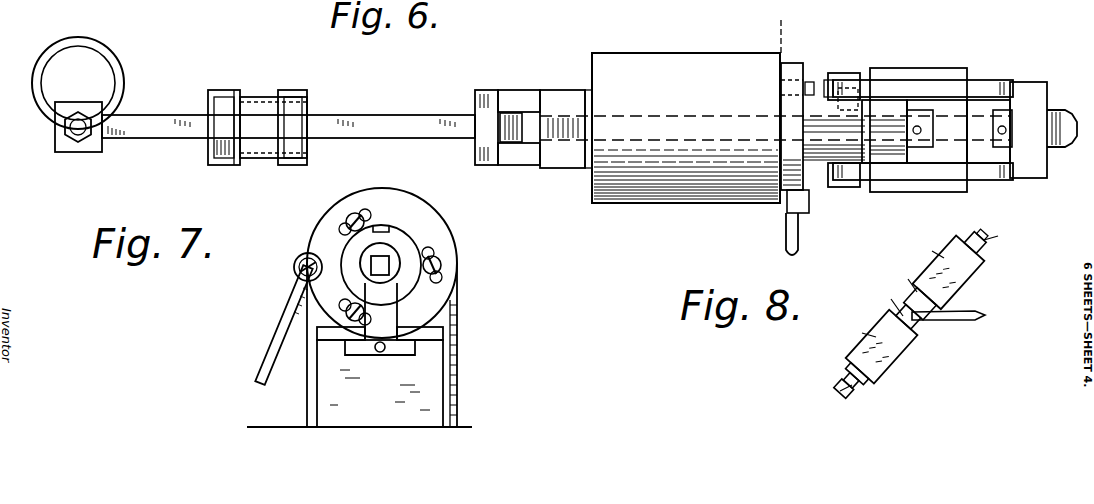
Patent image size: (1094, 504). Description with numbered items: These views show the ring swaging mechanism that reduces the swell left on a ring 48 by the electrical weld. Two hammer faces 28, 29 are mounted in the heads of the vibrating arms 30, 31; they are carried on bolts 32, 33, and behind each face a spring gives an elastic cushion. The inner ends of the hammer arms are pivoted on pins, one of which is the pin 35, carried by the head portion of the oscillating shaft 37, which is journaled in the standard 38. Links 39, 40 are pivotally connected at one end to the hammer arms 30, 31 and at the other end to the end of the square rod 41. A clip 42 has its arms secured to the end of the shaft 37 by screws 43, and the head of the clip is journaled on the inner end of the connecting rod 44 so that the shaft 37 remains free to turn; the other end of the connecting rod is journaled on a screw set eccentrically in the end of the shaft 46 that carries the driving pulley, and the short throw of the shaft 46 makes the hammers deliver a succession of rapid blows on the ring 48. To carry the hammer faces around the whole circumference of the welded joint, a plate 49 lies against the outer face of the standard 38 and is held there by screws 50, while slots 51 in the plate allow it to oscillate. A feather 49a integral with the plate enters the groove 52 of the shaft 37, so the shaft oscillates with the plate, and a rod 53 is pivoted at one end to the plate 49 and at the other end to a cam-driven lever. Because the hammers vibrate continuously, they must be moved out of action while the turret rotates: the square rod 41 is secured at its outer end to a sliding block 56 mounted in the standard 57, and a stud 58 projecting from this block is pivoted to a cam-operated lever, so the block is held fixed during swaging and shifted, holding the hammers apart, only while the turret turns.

In FIG. 8, the hammer face 28 is at (910, 291).
In FIG. 8, the hammer face 29 is at (892, 309).
In FIG. 6, the vibrating arm 30 is at (167, 110).
In FIG. 8, the vibrating arm 30 is at (939, 263).
In FIG. 8, the vibrating arm 31 is at (871, 343).
In FIG. 6, the bolt 32 is at (72, 127).
In FIG. 8, the bolt 32 is at (986, 236).
In FIG. 8, the bolt 33 is at (840, 379).
In FIG. 6, the pin 35 is at (500, 160).
In FIG. 6, the oscillating shaft 37 is at (830, 80).
In FIG. 6, the standard 38 is at (775, 111).
In FIG. 7, the standard 38 is at (397, 189).
In FIG. 6, the link 39 is at (255, 145).
In FIG. 6, the link 40 is at (212, 101).
In FIG. 6, the square rod 41 is at (934, 128).
In FIG. 7, the square rod 41 is at (380, 265).
In FIG. 6, the clip 42 is at (1008, 88).
In FIG. 6, the screw 43 is at (850, 73).
In FIG. 6, the connecting rod 44 is at (1064, 109).
In FIG. 6, the shaft 46 is at (110, 58).
In FIG. 8, the ring 48 is at (976, 311).
In FIG. 6, the plate 49 is at (798, 63).
In FIG. 7, the plate 49 is at (438, 245).
In FIG. 7, the feather 49a is at (383, 231).
In FIG. 6, the screw 50 is at (810, 85).
In FIG. 7, the screw 50 is at (350, 215).
In FIG. 7, the slot 51 is at (340, 226).
In FIG. 7, the groove 52 is at (375, 261).
In FIG. 6, the rod 53 is at (786, 237).
In FIG. 7, the rod 53 is at (283, 328).
In FIG. 6, the sliding block 56 is at (886, 116).
In FIG. 7, the sliding block 56 is at (352, 348).
In FIG. 6, the standard 57 is at (940, 68).
In FIG. 7, the standard 57 is at (380, 383).
In FIG. 7, the stud 58 is at (386, 350).